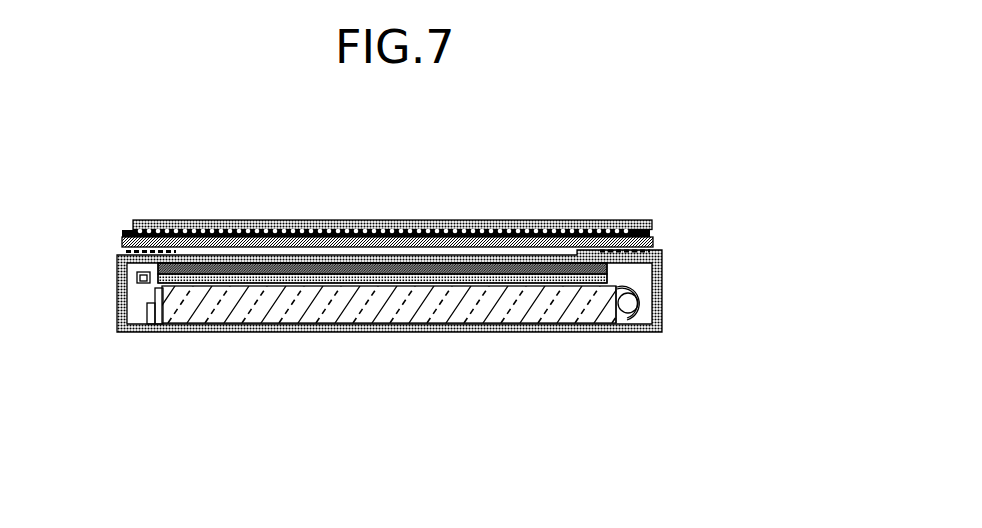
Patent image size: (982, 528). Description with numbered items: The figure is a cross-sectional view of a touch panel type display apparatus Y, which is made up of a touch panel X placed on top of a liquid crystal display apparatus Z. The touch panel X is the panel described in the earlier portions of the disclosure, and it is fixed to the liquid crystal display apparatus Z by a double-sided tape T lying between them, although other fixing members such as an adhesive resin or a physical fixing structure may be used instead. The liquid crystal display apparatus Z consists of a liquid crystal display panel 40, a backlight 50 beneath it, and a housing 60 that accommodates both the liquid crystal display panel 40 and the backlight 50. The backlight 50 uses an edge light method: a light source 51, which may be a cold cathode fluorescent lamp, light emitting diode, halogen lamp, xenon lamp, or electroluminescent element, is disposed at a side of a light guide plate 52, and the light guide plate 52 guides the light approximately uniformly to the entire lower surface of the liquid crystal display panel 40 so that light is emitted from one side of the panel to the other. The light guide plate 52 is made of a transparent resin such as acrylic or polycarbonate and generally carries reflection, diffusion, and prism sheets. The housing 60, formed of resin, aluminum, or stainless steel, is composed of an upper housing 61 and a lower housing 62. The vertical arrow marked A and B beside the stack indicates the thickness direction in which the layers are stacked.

The touch panel X is at (369, 217).
The touch panel type display apparatus Y is at (556, 185).
The double-sided tape T is at (654, 244).
The liquid crystal display apparatus Z is at (318, 332).
The liquid crystal display panel 40 is at (612, 268).
The backlight 50 is at (598, 353).
The light source 51 is at (629, 306).
The light guide plate 52 is at (585, 313).
The housing 60 is at (149, 349).
The upper housing 61 is at (117, 283).
The lower housing 62 is at (161, 333).
The direction A is at (740, 320).
The direction B is at (740, 335).